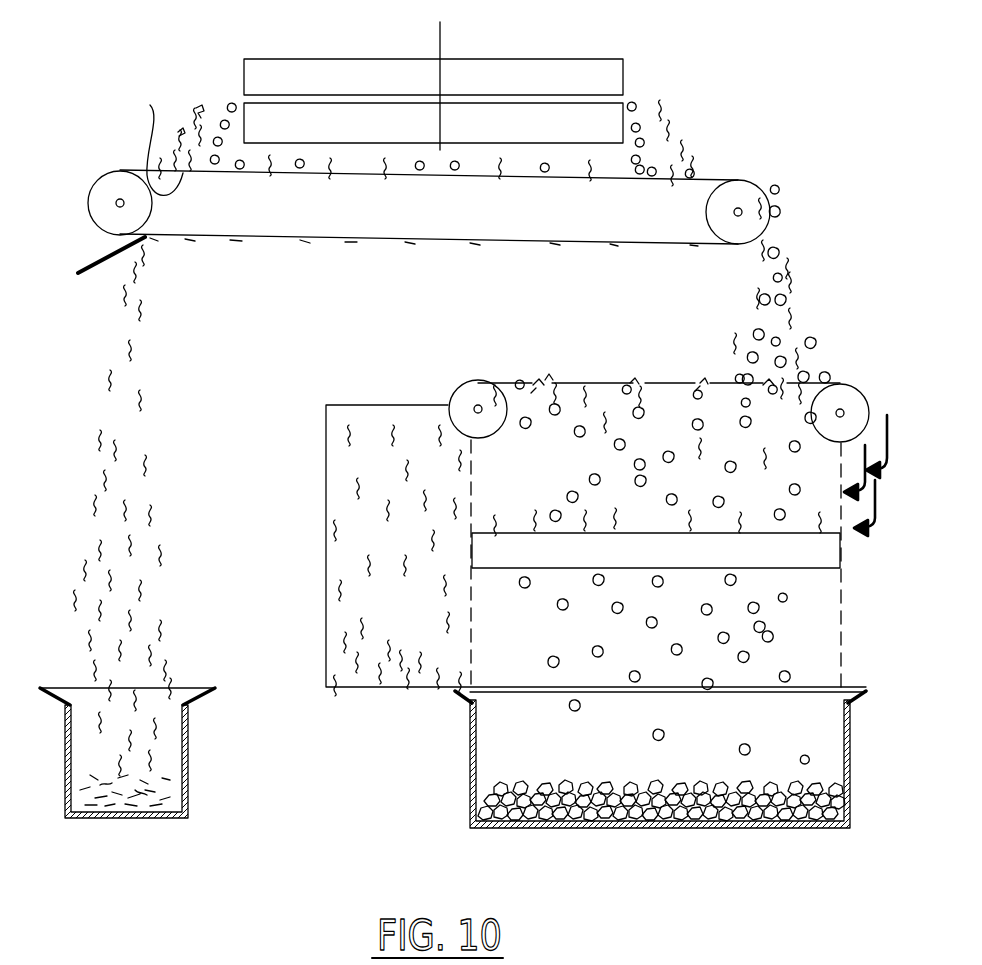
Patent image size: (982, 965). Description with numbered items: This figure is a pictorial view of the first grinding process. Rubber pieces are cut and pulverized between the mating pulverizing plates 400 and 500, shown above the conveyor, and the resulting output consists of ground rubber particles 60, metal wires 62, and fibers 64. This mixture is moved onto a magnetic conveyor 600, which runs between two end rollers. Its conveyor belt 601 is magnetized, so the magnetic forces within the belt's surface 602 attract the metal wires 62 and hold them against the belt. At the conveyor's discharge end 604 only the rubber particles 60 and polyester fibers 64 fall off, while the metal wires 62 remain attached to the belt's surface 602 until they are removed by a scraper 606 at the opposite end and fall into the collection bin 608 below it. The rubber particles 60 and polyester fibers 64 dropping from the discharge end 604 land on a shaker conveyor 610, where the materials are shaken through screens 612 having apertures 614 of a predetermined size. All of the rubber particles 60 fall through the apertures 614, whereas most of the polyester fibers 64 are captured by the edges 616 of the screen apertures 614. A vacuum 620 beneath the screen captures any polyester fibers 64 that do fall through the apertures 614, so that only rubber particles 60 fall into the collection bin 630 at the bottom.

The rubber particles 60 is at (232, 105).
The metal wires 62 is at (215, 108).
The fibers 64 is at (198, 110).
The pulverizing plate 400 is at (528, 147).
The pulverizing plate 500 is at (625, 80).
The magnetic conveyor 600 is at (132, 163).
The conveyor belt 601 is at (140, 145).
The belt's surface 602 is at (298, 238).
The discharge end 604 is at (777, 192).
The scraper 606 is at (107, 258).
The collection bin 608 is at (185, 778).
The shaker conveyor 610 is at (588, 382).
The screens 612 is at (507, 380).
The apertures 614 is at (545, 380).
The edges 616 is at (648, 382).
The vacuum 620 is at (500, 572).
The collection bin 630 is at (468, 786).